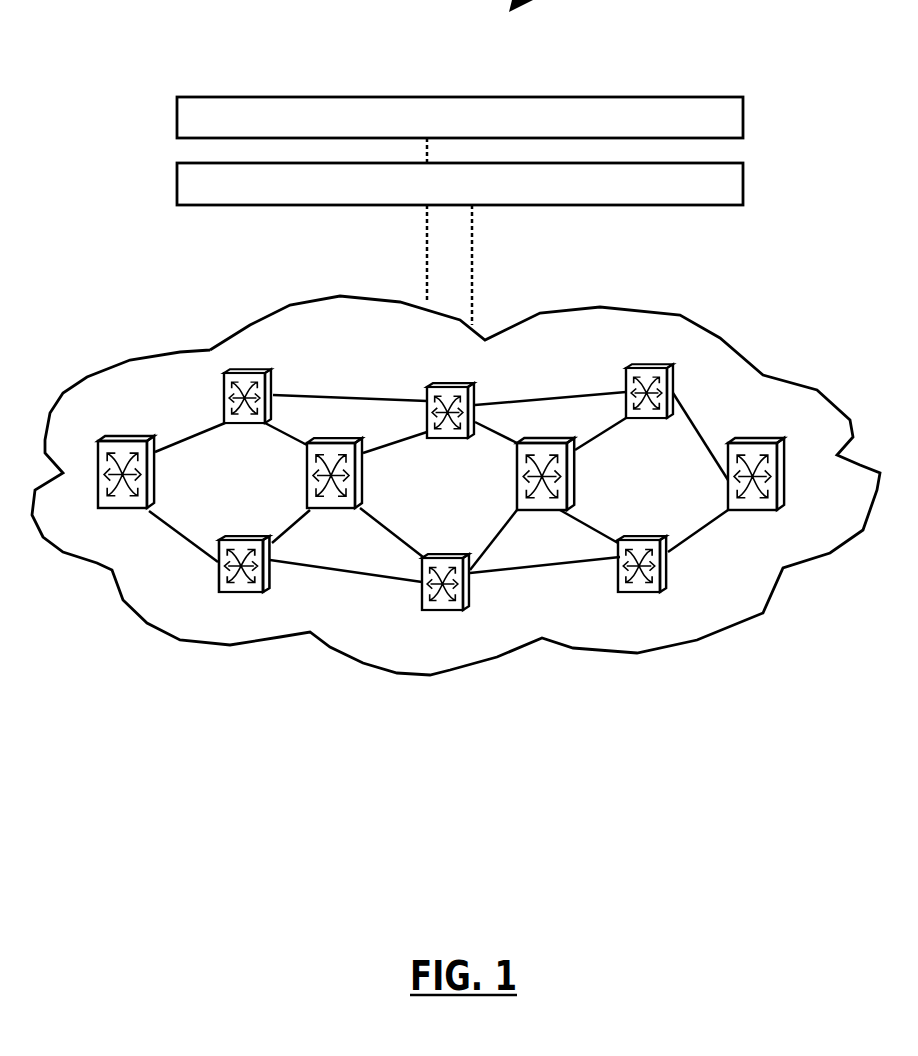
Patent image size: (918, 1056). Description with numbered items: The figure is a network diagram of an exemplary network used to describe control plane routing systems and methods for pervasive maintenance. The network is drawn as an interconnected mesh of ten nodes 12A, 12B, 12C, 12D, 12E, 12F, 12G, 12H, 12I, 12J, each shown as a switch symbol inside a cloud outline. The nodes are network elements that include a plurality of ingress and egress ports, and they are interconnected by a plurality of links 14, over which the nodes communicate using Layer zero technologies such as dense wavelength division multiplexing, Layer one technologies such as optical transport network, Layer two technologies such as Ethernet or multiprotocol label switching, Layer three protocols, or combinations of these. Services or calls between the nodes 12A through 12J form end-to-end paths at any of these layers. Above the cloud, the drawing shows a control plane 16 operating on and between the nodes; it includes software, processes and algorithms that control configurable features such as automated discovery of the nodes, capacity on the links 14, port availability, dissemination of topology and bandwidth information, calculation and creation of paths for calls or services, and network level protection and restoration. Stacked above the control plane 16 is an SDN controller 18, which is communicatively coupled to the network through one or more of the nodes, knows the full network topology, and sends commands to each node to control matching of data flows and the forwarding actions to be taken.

The SDN controller 18 is at (743, 117).
The control plane 16 is at (743, 184).
The link 14 is at (350, 393).
The node 12A is at (131, 440).
The node 12B is at (337, 510).
The node 12C is at (543, 512).
The node 12D is at (752, 512).
The node 12E is at (257, 369).
The node 12F is at (443, 440).
The node 12G is at (645, 420).
The node 12H is at (250, 537).
The node 12I is at (449, 554).
The node 12J is at (647, 535).